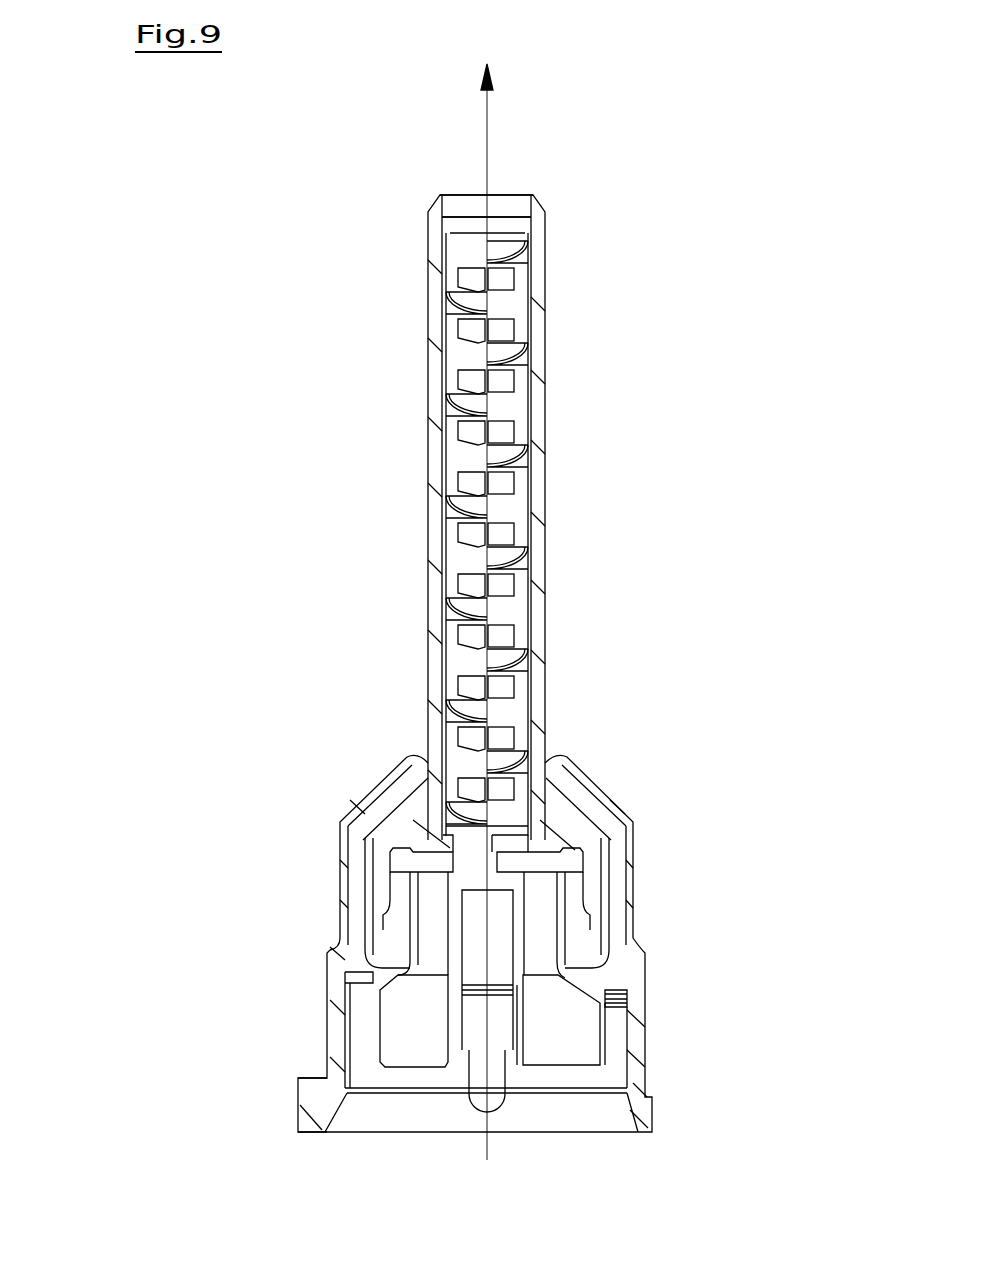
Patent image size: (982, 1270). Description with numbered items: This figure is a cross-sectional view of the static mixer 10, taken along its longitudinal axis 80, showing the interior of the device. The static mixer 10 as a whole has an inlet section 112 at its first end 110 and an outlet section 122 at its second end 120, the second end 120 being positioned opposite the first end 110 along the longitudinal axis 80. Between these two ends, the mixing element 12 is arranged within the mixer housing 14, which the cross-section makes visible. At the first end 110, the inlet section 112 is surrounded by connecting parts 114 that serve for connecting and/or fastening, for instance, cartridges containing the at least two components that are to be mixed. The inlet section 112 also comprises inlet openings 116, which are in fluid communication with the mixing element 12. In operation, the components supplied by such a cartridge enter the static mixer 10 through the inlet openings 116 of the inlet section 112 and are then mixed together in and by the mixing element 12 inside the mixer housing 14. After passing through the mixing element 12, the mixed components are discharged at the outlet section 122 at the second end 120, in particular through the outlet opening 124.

The static mixer 10 is at (788, 487).
The mixing element 12 is at (470, 455).
The mixer housing 14 is at (535, 508).
The longitudinal axis 80 is at (487, 120).
The first end 110 is at (720, 1108).
The inlet section 112 is at (562, 1047).
The connecting parts 114 is at (313, 1077).
The inlet openings 116 is at (436, 1042).
The second end 120 is at (347, 163).
The outlet section 122 is at (530, 208).
The outlet opening 124 is at (503, 205).